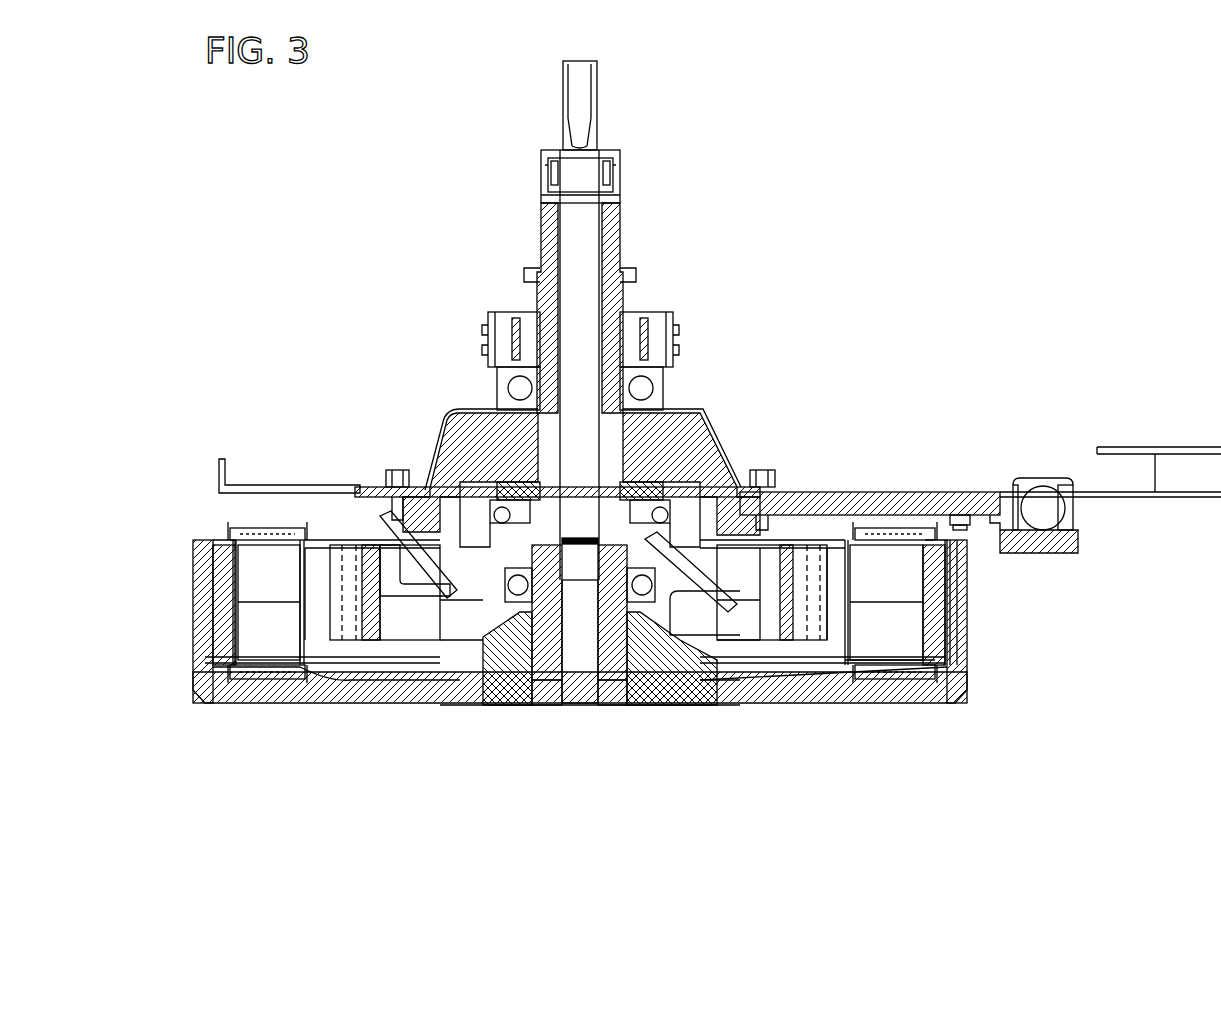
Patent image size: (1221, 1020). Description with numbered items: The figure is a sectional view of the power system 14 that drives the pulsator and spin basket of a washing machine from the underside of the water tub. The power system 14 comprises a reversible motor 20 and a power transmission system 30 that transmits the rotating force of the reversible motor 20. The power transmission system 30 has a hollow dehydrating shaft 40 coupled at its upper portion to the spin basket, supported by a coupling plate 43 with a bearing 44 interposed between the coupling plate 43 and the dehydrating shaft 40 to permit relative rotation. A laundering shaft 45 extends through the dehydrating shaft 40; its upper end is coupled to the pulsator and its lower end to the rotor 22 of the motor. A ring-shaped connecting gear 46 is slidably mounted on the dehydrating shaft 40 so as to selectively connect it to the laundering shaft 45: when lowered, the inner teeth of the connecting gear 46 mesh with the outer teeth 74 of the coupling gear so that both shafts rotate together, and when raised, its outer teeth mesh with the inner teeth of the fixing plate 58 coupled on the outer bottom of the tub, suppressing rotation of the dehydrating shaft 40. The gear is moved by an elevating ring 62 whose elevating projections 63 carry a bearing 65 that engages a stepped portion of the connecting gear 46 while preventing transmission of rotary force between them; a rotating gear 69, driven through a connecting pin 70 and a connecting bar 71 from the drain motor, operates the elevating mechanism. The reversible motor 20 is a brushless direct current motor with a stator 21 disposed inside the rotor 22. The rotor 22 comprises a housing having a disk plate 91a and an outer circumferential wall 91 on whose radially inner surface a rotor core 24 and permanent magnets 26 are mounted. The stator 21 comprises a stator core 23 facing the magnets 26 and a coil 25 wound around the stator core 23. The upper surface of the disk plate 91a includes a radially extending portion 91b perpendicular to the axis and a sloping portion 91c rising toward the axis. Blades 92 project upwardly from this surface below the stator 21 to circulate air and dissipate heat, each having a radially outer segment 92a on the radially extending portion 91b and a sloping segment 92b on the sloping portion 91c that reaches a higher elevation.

The power system 14 is at (588, 705).
The reversible motor 20 is at (1062, 647).
The stator 21 is at (827, 652).
The rotor 22 is at (945, 702).
The stator core 23 is at (863, 647).
The rotor core 24 is at (965, 665).
The coil 25 is at (898, 683).
The permanent magnets 26 is at (965, 618).
The power transmission system 30 is at (456, 378).
The dehydrating shaft 40 is at (620, 232).
The coupling plate 43 is at (668, 395).
The bearing 44 is at (640, 387).
The laundering shaft 45 is at (583, 157).
The connecting gear 46 is at (700, 432).
The fixing plate 58 is at (710, 470).
The elevating ring 62 is at (648, 537).
The elevating projections 63 is at (448, 505).
The bearing 65 is at (487, 605).
The rotating gear 69 is at (835, 490).
The connecting pin 70 is at (960, 515).
The connecting bar 71 is at (992, 520).
The outer teeth 74 is at (520, 572).
The outer circumferential wall 91 is at (958, 580).
The disk plate 91a is at (905, 660).
The radially extending portion 91b is at (232, 702).
The sloping portion 91c is at (497, 560).
The blades 92 is at (323, 690).
The radially outer segment 92a is at (470, 612).
The sloping segment 92b is at (388, 665).